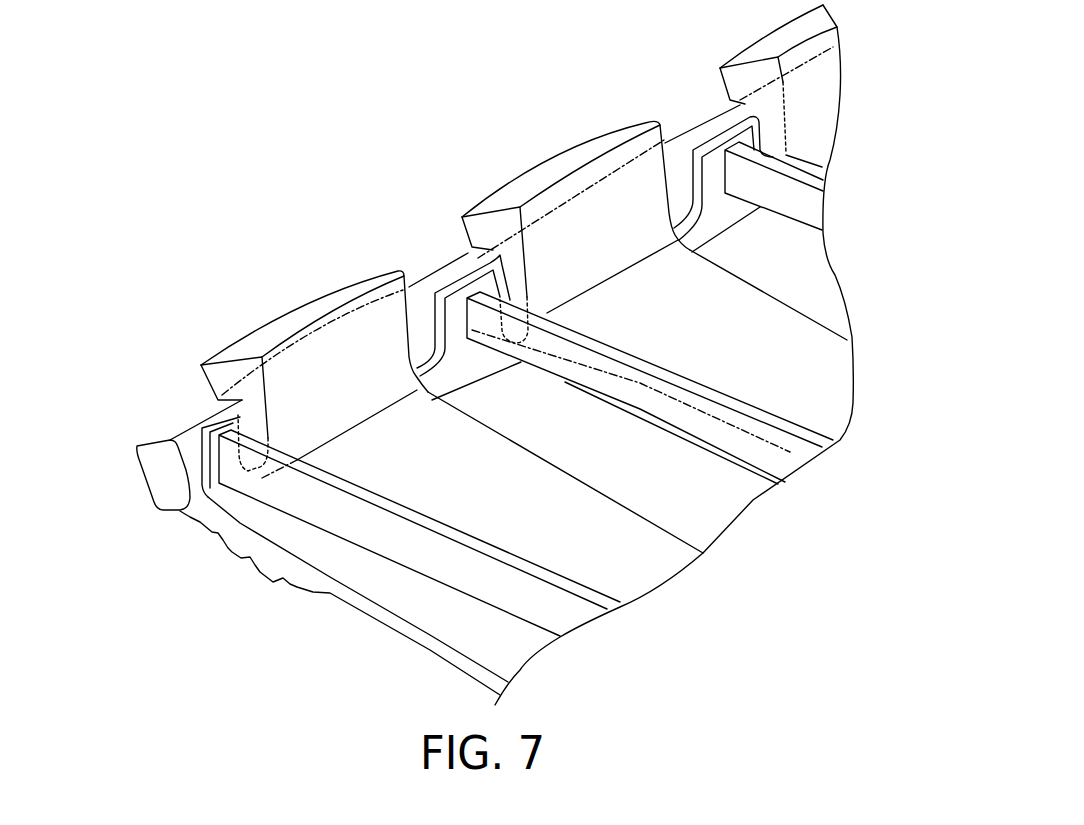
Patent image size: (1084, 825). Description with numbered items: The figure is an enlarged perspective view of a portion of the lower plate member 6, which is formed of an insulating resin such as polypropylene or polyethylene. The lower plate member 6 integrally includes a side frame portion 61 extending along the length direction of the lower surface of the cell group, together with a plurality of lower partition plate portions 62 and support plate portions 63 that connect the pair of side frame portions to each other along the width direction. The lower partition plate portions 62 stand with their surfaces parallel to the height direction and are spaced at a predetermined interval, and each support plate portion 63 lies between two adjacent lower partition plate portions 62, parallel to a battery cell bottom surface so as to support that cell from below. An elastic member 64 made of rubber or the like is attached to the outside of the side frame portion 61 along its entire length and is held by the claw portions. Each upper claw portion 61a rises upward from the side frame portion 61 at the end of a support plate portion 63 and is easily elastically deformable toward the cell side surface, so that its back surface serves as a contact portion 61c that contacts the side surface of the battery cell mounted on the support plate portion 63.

The lower plate member 6 is at (500, 355).
The side frame portion 61 is at (237, 552).
The upper claw portion 61a is at (277, 328).
The contact portion 61c is at (326, 332).
The lower partition plate portion 62 is at (767, 433).
The support plate portion 63 is at (753, 308).
The elastic member 64 is at (148, 475).